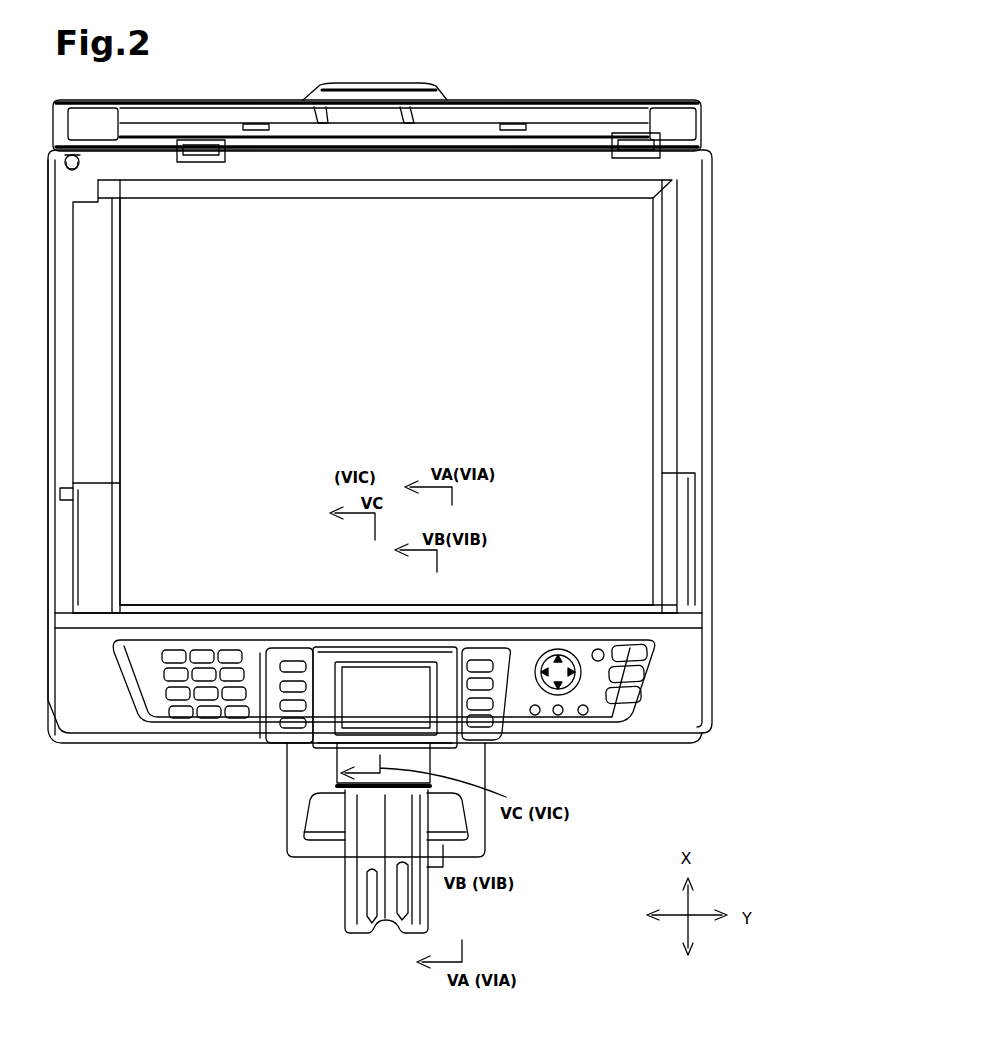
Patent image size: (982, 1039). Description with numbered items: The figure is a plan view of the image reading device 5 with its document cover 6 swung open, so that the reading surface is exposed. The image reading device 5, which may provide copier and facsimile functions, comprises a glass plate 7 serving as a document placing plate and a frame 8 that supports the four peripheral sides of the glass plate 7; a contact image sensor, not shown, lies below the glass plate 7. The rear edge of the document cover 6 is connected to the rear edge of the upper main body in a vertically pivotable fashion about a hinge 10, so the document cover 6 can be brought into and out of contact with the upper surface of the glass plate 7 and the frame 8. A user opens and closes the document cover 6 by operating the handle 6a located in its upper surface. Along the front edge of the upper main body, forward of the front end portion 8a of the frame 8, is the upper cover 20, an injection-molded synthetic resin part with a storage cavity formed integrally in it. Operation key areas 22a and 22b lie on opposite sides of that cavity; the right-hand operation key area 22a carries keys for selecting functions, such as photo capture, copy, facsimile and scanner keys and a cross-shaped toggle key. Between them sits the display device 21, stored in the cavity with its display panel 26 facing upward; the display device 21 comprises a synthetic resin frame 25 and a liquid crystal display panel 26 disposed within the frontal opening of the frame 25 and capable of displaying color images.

The image reading device 5 is at (783, 383).
The document cover 6 is at (484, 93).
The handle 6a is at (392, 83).
The glass plate 7 is at (600, 345).
The frame 8 is at (412, 183).
The front end portion 8a is at (531, 606).
The hinge 10 is at (192, 163).
The upper cover 20 is at (664, 698).
The display device 21 is at (286, 742).
The operation key area 22a is at (584, 713).
The operation key area 22b is at (186, 715).
The frame 25 is at (327, 655).
The display panel 26 is at (350, 680).